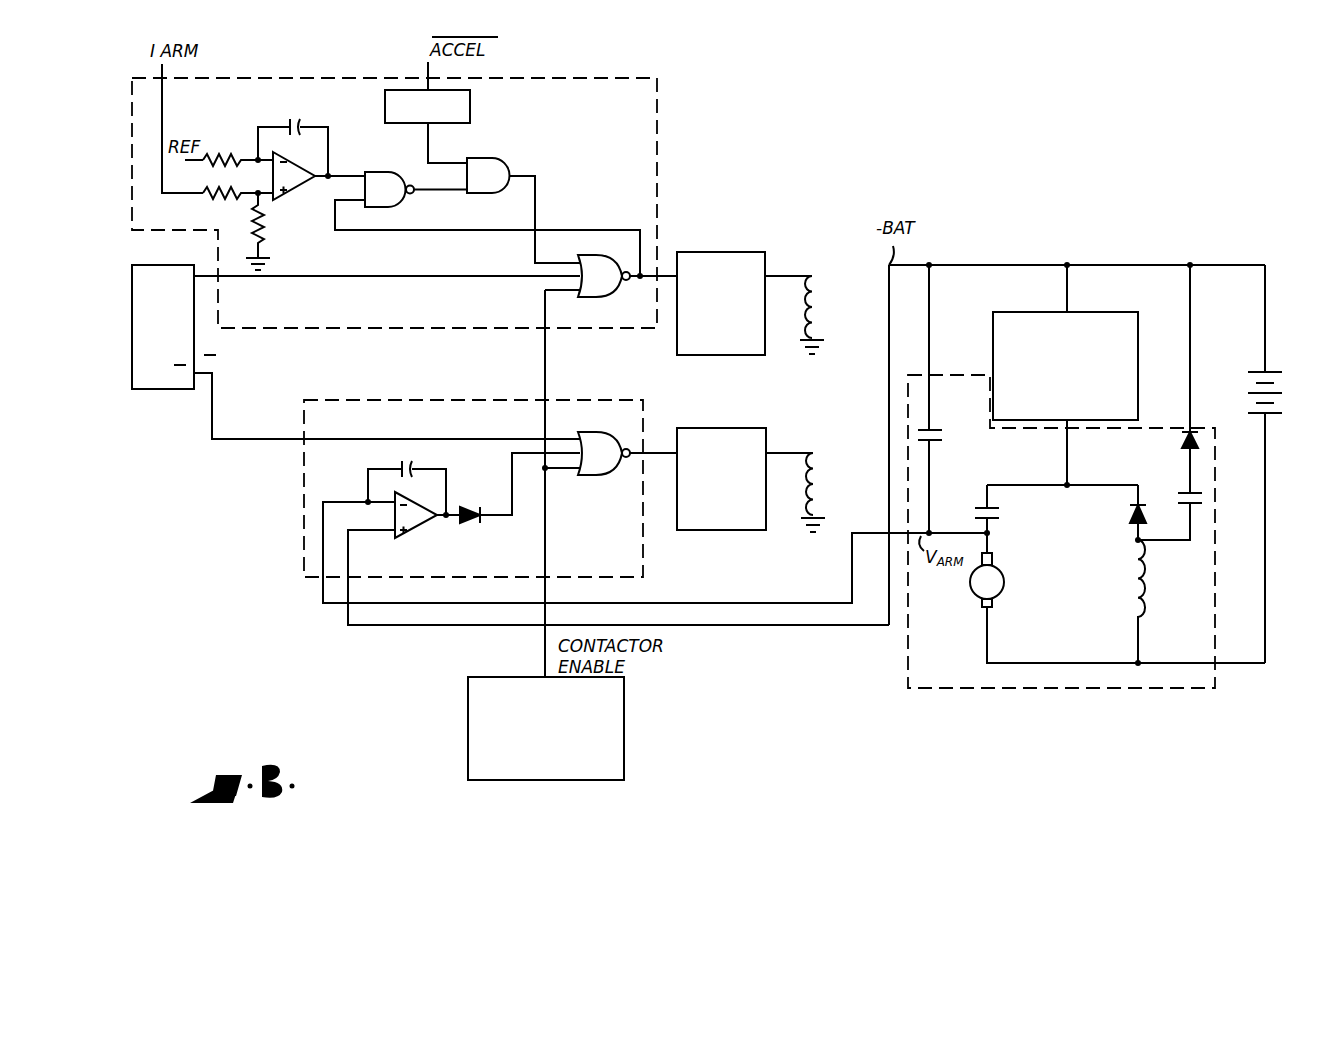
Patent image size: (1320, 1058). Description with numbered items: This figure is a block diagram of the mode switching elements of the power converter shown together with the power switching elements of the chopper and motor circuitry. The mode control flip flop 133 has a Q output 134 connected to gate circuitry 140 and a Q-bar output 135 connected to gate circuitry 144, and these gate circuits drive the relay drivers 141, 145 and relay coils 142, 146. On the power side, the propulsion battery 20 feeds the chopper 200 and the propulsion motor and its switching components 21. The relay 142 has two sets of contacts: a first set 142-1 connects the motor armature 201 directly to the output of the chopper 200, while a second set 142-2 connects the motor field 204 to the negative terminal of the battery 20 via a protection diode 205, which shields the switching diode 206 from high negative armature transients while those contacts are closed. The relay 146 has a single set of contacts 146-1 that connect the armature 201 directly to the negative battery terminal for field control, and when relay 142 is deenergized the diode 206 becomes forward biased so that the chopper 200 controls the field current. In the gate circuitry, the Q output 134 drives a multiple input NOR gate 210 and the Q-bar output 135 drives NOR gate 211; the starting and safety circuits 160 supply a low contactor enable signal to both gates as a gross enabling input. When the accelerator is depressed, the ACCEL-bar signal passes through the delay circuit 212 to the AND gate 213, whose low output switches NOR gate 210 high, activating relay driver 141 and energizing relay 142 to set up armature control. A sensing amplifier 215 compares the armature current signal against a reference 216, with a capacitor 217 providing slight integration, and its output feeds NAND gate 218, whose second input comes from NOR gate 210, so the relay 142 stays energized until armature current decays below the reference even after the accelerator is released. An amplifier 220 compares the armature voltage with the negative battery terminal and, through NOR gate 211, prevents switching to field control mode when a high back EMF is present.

The main propulsion battery 20 is at (1275, 420).
The propulsion motor and associated switching components 21 is at (1075, 688).
The mode control flip flop 133 is at (132, 375).
The Q output 134 is at (228, 278).
The Q-bar output 135 is at (212, 380).
The gate circuitry 140 is at (630, 78).
The relay driver 141 is at (722, 252).
The relay coil 142 is at (820, 300).
The first set of contacts 142-1 is at (975, 502).
The second set of contacts 142-2 is at (1202, 508).
The gate circuitry 144 is at (632, 400).
The relay driver 145 is at (740, 414).
The relay coil 146 is at (822, 490).
The contacts 146-1 is at (945, 432).
The starting and safety circuits 160 is at (468, 722).
The chopper 200 is at (1135, 296).
The motor armature 201 is at (1006, 585).
The motor field 204 is at (1134, 594).
The protection diode 205 is at (1182, 446).
The switching diode 206 is at (1126, 514).
The NOR gate 210 is at (580, 297).
The NOR gate 211 is at (602, 432).
The delay circuit 212 is at (470, 107).
The AND gate 213 is at (494, 158).
The sensing amplifier 215 is at (282, 202).
The reference 216 is at (228, 160).
The capacitor 217 is at (300, 120).
The NAND gate 218 is at (390, 172).
The amplifier 220 is at (405, 538).